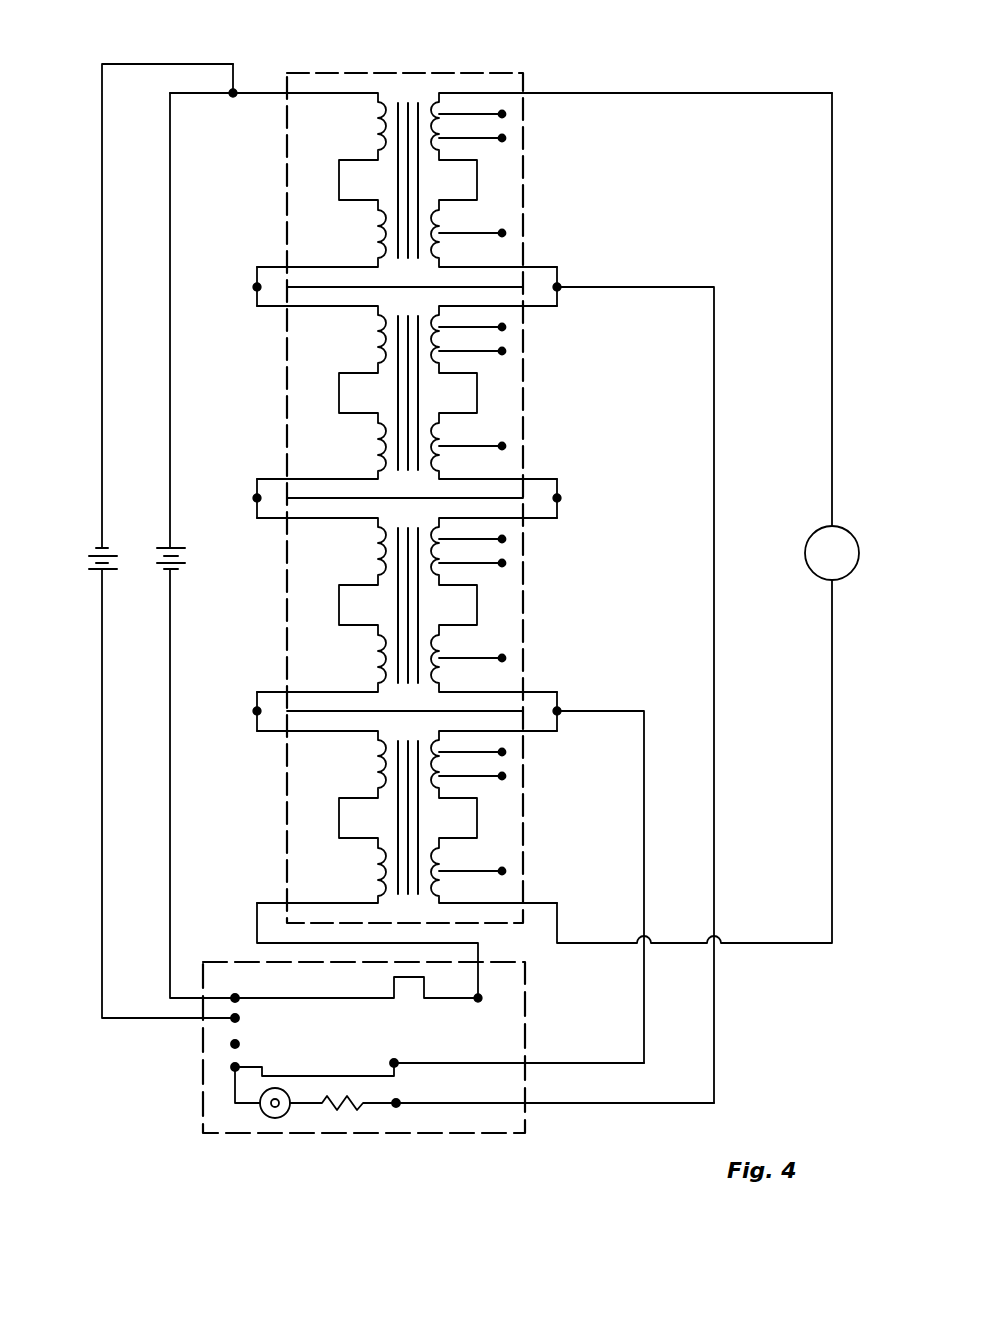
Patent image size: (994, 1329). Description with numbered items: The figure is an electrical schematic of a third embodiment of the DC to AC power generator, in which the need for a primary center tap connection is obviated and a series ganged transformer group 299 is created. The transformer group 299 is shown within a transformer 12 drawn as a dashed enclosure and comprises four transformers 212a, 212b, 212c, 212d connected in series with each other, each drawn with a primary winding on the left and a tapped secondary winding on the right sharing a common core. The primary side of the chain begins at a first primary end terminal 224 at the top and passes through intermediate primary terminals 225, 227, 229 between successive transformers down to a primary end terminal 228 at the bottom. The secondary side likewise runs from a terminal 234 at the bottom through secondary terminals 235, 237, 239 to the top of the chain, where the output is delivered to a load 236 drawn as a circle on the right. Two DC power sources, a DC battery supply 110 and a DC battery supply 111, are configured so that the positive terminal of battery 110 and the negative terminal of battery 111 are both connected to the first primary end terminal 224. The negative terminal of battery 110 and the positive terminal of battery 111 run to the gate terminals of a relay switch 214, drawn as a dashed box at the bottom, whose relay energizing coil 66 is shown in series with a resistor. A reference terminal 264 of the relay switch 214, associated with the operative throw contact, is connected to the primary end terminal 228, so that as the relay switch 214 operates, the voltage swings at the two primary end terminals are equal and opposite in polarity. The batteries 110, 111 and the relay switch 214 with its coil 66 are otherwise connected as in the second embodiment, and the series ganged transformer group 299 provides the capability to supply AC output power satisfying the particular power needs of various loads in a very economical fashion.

The transformer 12 is at (478, 93).
The series ganged transformer group 299 is at (388, 58).
The transformer 212a is at (517, 190).
The transformer 212b is at (512, 381).
The transformer 212c is at (512, 591).
The transformer 212d is at (515, 805).
The primary winding terminal 224 is at (232, 96).
The primary winding tap 225 is at (257, 287).
The primary winding tap 227 is at (257, 498).
The primary winding tap 229 is at (257, 711).
The primary winding terminal 228 is at (257, 921).
The secondary winding tap 235 is at (557, 287).
The secondary winding tap 237 is at (557, 498).
The secondary winding tap 239 is at (557, 711).
The secondary winding terminal 234 is at (560, 921).
The load 236 is at (804, 553).
The DC battery supply 111 is at (102, 548).
The DC battery supply 110 is at (171, 570).
The relay switch 214 is at (478, 1125).
The switch node 264 is at (478, 1002).
The relay energizing coil 66 is at (306, 1108).